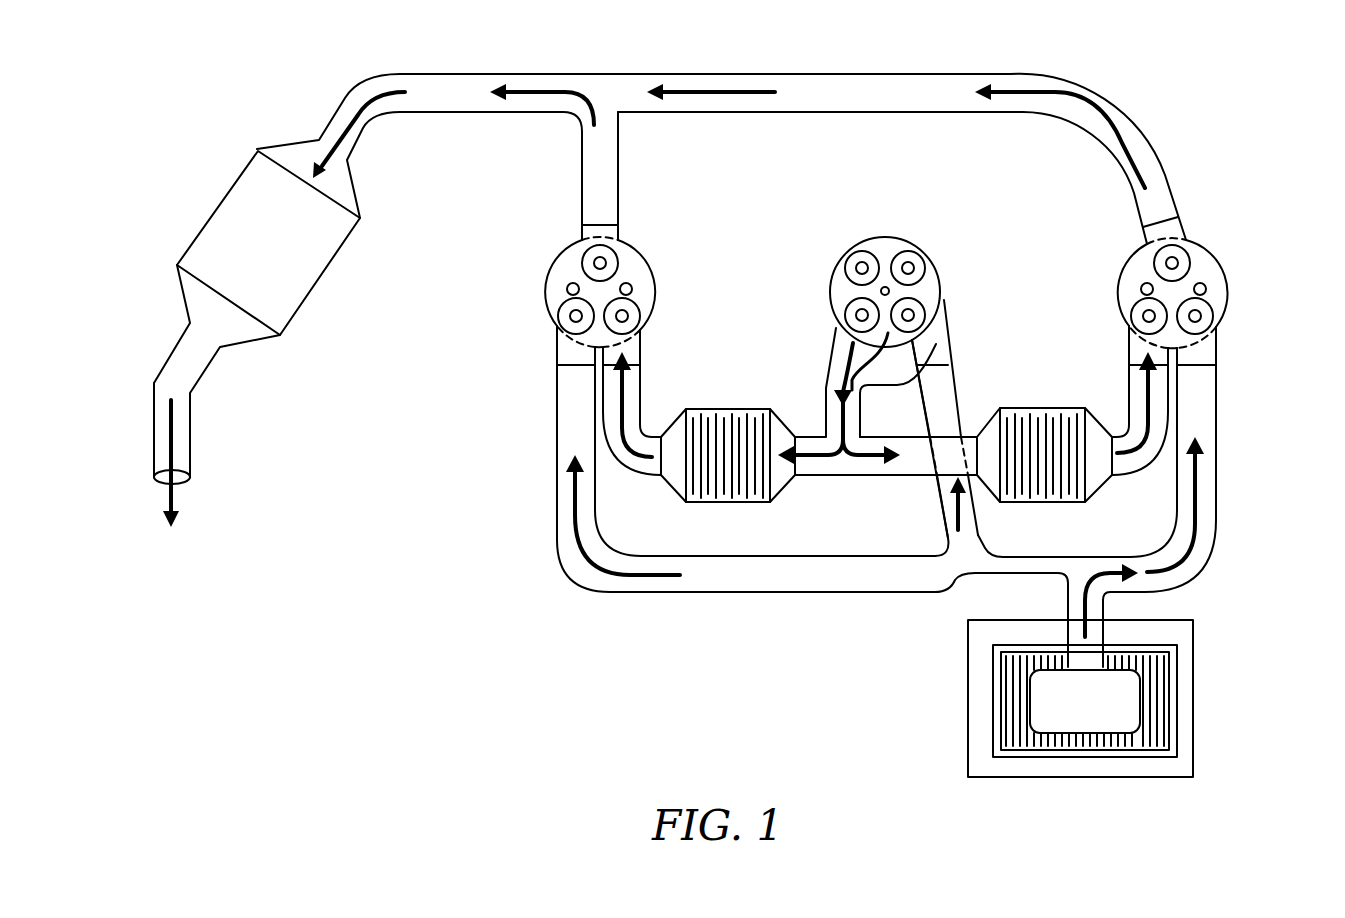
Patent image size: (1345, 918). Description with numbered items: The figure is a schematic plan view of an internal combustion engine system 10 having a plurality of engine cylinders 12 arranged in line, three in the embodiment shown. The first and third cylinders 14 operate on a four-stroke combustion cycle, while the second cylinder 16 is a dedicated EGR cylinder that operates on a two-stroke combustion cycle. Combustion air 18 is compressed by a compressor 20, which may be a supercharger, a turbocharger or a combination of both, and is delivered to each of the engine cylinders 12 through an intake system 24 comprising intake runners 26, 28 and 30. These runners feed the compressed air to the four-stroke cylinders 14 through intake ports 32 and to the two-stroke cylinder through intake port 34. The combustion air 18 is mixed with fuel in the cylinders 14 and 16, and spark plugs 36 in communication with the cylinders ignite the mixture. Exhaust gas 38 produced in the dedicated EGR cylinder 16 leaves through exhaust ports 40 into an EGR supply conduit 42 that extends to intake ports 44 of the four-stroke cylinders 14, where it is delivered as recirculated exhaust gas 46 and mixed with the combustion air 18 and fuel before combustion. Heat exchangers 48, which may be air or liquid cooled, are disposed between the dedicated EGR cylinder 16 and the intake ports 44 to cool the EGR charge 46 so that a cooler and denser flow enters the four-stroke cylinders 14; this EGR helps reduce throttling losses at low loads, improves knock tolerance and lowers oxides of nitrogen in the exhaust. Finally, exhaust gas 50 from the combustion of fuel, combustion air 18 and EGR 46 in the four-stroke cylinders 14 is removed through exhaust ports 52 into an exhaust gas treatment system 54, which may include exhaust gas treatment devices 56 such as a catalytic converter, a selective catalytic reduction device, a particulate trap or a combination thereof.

The internal combustion engine system 10 is at (420, 568).
The engine cylinders 12 is at (933, 273).
The first and third cylinders 14 is at (656, 300).
The second cylinder 16 is at (858, 252).
The combustion air 18 is at (568, 512).
The compressor 20 is at (1212, 678).
The intake system 24 is at (768, 604).
The intake runner 26 is at (578, 379).
The intake runner 28 is at (1208, 386).
The intake runner 30 is at (950, 541).
The intake ports 32 is at (566, 345).
The intake port 34 is at (856, 263).
The spark plugs 36 is at (570, 286).
The exhaust gas 38 is at (840, 432).
The exhaust ports 40 is at (851, 345).
The EGR supply conduit 42 is at (825, 422).
The intake ports 44 is at (650, 350).
The recirculated exhaust gas 46 is at (621, 408).
The heat exchangers 48 is at (735, 505).
The exhaust gas 50 is at (722, 74).
The exhaust ports 52 is at (583, 235).
The exhaust gas treatment system 54 is at (254, 196).
The exhaust gas treatment devices 56 is at (268, 243).